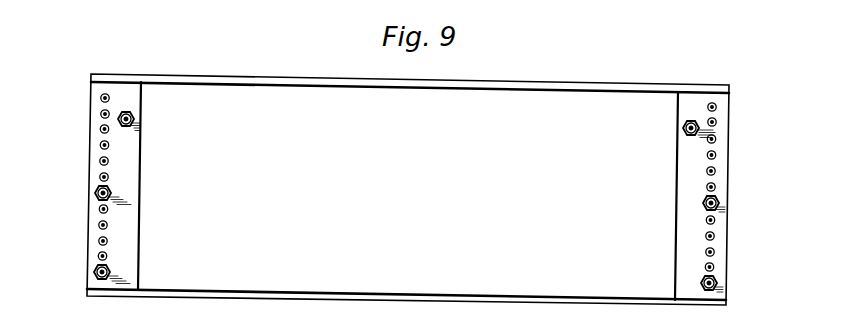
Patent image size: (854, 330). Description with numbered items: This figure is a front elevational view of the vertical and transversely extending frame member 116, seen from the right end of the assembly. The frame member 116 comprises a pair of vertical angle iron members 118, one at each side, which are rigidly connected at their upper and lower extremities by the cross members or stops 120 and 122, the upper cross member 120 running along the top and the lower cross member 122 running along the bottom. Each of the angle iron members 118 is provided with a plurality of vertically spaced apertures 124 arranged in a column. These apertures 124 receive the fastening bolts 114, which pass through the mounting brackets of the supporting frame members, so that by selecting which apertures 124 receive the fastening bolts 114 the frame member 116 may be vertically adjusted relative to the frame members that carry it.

The frame member 116 is at (579, 75).
The vertical angle iron members 118 is at (137, 179).
The cross member or stop 120 is at (396, 88).
The cross member or stop 122 is at (415, 294).
The vertically spaced apertures 124 is at (99, 130).
The fastening bolts 114 is at (719, 203).